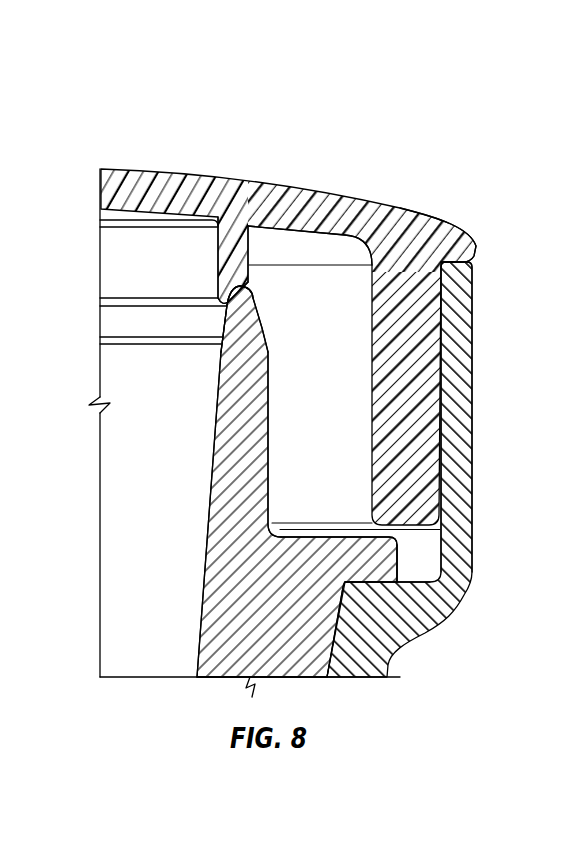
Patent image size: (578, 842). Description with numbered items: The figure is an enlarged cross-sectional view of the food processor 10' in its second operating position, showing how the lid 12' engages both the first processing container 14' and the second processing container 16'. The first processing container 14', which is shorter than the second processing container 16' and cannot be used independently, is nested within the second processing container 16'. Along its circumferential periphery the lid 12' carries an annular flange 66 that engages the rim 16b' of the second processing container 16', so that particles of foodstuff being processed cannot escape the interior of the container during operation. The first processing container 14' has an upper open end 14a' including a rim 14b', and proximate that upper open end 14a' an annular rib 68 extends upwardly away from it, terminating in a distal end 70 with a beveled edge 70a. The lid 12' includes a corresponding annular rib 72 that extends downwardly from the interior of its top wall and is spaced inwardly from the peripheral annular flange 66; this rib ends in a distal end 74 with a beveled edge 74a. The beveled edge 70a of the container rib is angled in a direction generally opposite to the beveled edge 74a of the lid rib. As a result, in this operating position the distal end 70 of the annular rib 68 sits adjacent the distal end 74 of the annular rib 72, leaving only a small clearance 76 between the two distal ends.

The food processor 10' is at (321, 394).
The lid 12' is at (314, 334).
The first processing container 14' is at (375, 596).
The upper open end 14a' is at (474, 560).
The rim 14b' is at (412, 531).
The second processing container 16' is at (440, 469).
The rim 16b' is at (497, 417).
The annular flange 66 is at (457, 238).
The annular rib 68 is at (297, 481).
The distal end 70 is at (243, 337).
The beveled edge 70a is at (232, 318).
The annular rib 72 is at (228, 250).
The distal end 74 is at (238, 288).
The beveled edge 74a is at (250, 282).
The clearance 76 is at (252, 297).